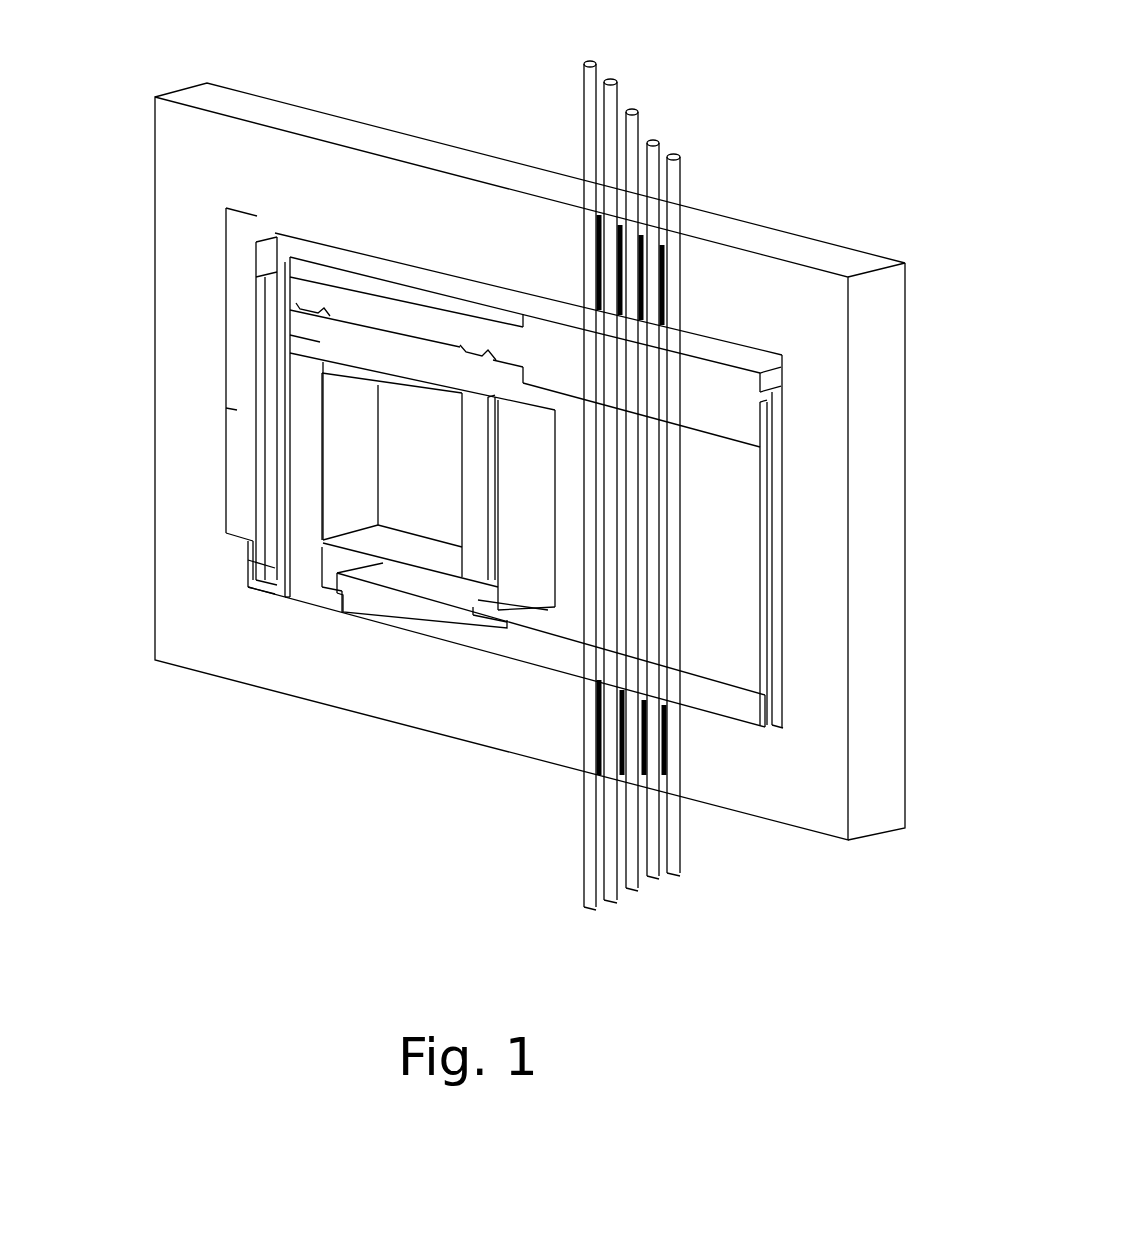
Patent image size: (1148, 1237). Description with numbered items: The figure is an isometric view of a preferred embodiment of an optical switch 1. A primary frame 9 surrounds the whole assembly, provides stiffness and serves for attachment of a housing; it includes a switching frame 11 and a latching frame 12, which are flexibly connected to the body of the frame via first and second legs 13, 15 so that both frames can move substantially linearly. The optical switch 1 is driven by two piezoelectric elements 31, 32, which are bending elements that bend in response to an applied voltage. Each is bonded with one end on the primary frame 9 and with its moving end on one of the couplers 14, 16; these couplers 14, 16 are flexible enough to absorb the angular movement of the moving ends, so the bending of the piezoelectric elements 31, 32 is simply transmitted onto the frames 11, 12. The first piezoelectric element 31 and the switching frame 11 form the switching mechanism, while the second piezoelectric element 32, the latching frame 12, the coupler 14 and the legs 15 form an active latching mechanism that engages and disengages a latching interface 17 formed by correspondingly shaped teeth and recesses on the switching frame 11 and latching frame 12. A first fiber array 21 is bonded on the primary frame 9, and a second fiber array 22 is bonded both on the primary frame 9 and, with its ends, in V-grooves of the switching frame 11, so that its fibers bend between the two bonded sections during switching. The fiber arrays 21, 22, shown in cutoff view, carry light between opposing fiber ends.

The optical switch 1 is at (203, 797).
The primary frame 9 is at (310, 598).
The switching frame 11 is at (388, 313).
The latching frame 12 is at (421, 363).
The first legs 13 is at (282, 372).
The coupler 14 is at (347, 260).
The second legs 15 is at (397, 392).
The coupler 16 is at (527, 498).
The latching interface 17 is at (330, 312).
The first fiber array 21 is at (673, 155).
The second fiber array 22 is at (590, 908).
The first piezoelectric element 31 is at (255, 398).
The second piezoelectric element 32 is at (367, 583).